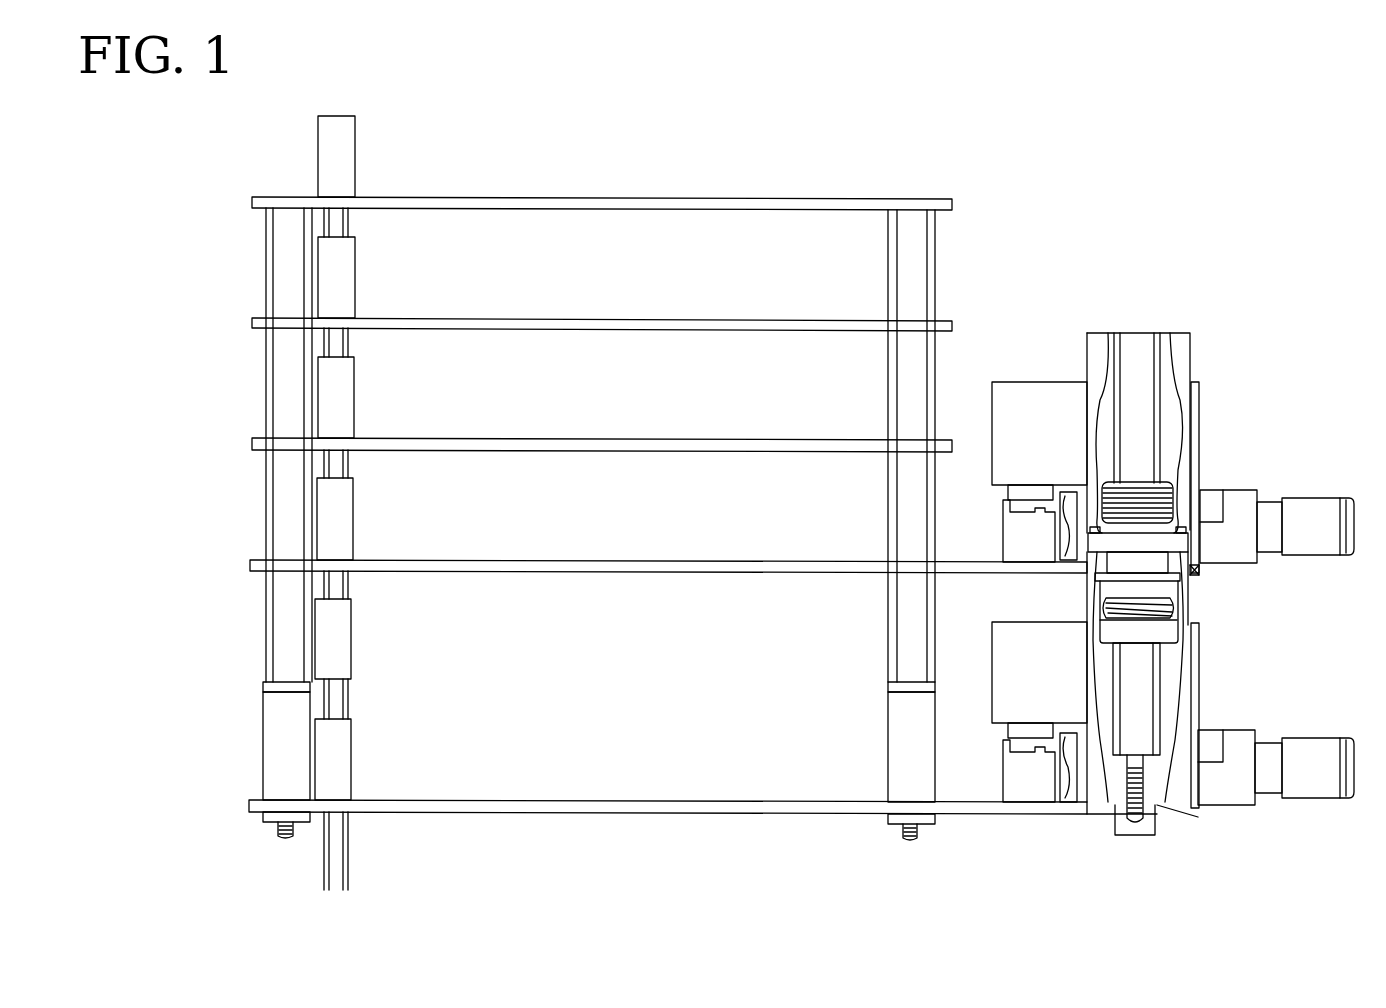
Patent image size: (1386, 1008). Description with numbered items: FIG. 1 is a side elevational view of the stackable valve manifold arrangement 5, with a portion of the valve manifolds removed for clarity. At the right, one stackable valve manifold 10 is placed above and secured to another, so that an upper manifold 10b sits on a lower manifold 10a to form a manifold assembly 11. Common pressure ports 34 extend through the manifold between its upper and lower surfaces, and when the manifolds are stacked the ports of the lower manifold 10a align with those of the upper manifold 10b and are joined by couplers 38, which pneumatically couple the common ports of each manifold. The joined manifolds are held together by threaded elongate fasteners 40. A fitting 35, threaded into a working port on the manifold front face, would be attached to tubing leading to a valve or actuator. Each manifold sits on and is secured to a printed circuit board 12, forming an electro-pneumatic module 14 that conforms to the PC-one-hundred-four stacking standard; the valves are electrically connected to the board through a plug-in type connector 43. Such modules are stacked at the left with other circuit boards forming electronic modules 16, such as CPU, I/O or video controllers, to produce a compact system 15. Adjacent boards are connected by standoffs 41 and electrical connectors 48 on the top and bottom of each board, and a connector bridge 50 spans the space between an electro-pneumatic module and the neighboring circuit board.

The stackable valve manifold arrangement 5 is at (1104, 170).
The stackable valve manifold 10 is at (1206, 572).
The lower manifold 10a is at (1167, 773).
The upper manifold 10b is at (1172, 350).
The manifold assembly 11 is at (1176, 583).
The printed circuit board 12 is at (487, 812).
The electro-pneumatic module 14 is at (632, 568).
The compact system 15 is at (240, 187).
The electronic modules 16 is at (950, 446).
The common pressure ports 34 is at (1162, 333).
The fitting 35 is at (1313, 508).
The couplers 38 is at (1153, 483).
The threaded elongate fasteners 40 is at (1140, 708).
The standoffs 41 is at (900, 752).
The plug-in type connector 43 is at (1025, 783).
The electrical connector 48 is at (345, 415).
The connector bridge 50 is at (345, 662).